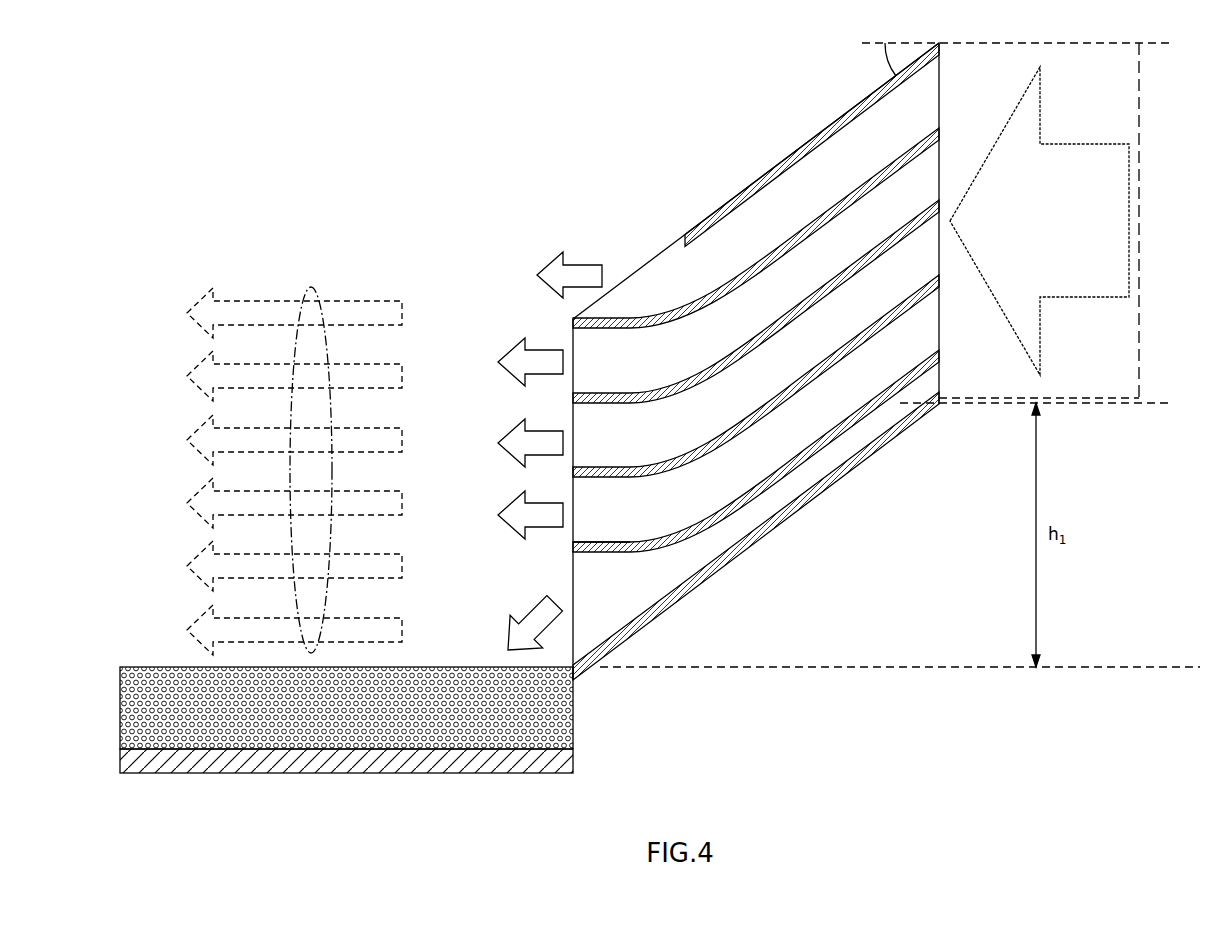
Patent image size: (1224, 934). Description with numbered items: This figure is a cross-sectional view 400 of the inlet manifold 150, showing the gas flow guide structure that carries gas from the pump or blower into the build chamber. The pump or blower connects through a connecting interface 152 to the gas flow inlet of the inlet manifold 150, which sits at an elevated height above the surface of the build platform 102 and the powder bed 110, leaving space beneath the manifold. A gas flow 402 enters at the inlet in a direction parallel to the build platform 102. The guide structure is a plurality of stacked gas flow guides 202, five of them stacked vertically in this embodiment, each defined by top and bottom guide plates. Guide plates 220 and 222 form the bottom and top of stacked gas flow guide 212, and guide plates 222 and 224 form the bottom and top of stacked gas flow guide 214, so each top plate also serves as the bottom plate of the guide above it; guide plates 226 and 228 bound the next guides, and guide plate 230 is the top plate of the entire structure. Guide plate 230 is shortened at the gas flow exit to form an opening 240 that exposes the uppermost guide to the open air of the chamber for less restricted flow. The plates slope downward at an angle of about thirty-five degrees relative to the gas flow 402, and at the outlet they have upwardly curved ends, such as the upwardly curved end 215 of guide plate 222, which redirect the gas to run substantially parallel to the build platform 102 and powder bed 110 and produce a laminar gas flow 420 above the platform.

The cross-sectional view 400 is at (583, 177).
The opening 240 is at (660, 243).
The guide plate 230 is at (750, 172).
The inlet manifold 150 is at (812, 135).
The connecting interface 152 is at (1139, 102).
The gas flow 402 is at (1070, 143).
The guide plate 228 is at (757, 262).
The guide plate 226 is at (795, 306).
The guide plate 224 is at (808, 372).
The guide plate 222 is at (807, 449).
The guide plate 220 is at (806, 490).
The upwardly curved end 215 is at (607, 541).
The stacked gas flow guide 214 is at (585, 519).
The stacked gas flow guide 212 is at (597, 567).
The stacked gas flow guides 202 is at (538, 305).
The laminar gas flow 420 is at (305, 298).
The powder bed 110 is at (140, 657).
The build platform 102 is at (233, 774).